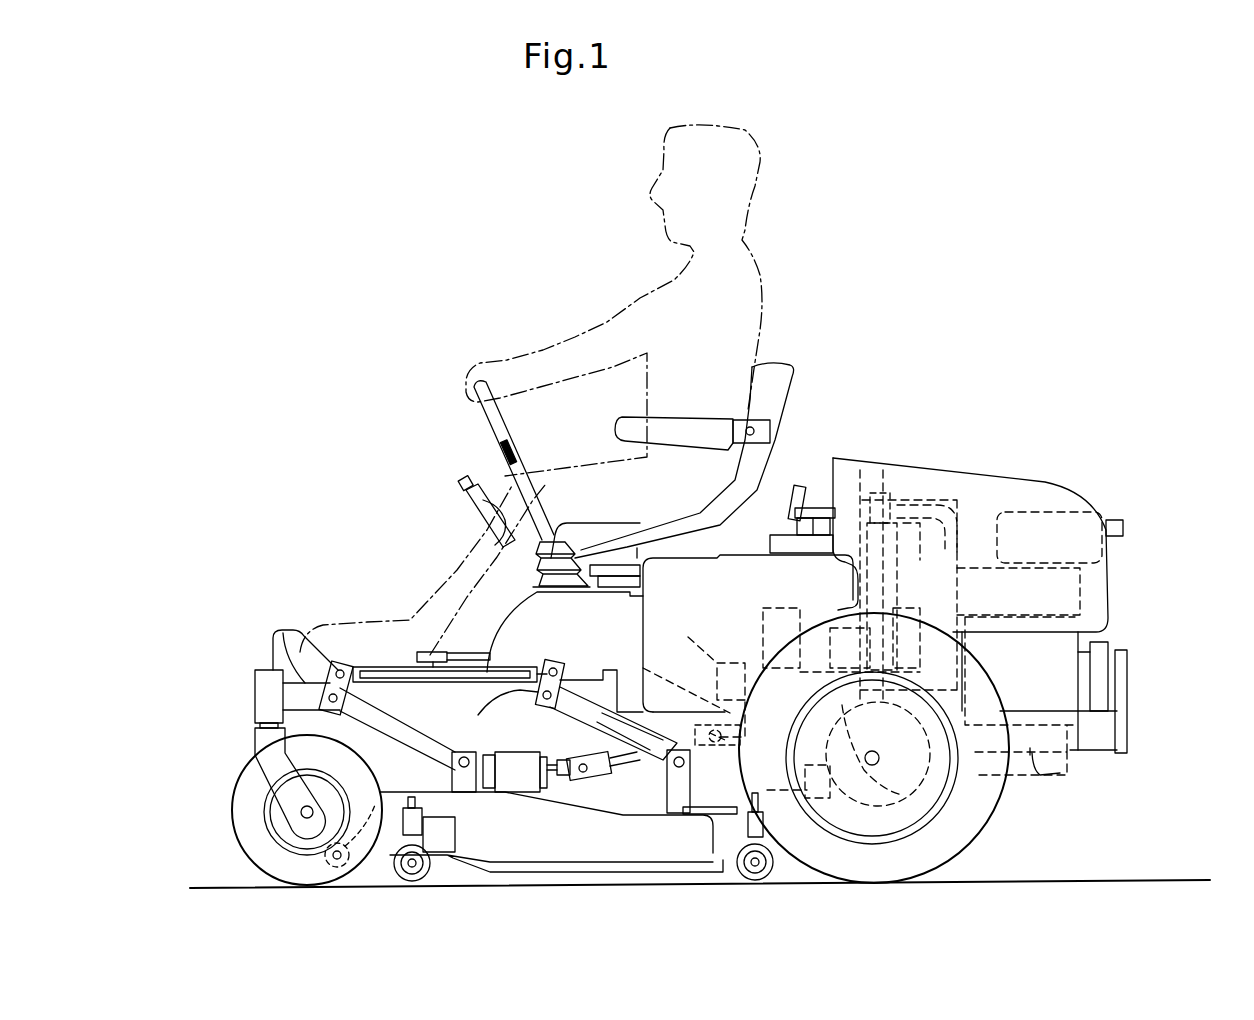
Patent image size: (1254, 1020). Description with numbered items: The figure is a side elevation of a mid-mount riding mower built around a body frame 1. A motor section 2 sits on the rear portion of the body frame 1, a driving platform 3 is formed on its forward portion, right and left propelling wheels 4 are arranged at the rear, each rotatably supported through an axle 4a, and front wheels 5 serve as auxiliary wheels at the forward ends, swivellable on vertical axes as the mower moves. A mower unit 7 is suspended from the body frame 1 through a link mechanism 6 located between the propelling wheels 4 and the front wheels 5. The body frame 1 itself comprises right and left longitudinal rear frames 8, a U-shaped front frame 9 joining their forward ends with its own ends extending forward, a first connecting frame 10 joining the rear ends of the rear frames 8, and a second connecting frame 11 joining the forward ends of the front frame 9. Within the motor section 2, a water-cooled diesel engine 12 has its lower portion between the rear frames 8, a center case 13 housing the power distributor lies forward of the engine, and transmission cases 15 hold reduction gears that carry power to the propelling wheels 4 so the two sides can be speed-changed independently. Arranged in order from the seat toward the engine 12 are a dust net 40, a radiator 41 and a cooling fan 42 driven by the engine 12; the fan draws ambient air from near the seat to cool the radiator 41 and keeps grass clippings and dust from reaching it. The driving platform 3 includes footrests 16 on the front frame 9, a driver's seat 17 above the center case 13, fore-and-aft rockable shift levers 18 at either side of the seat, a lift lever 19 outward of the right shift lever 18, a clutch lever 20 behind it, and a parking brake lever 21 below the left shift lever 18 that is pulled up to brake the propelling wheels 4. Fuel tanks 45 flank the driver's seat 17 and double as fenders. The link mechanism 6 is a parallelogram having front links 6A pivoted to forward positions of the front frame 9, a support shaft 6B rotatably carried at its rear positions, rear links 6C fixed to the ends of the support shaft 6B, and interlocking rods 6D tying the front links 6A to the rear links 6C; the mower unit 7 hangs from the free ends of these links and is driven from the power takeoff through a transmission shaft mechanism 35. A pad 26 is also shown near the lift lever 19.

The body frame 1 is at (1099, 760).
The motor section 2 is at (992, 462).
The driving platform 3 is at (500, 345).
The propelling wheels 4 is at (975, 833).
The axle 4a is at (880, 759).
The front wheels 5 is at (233, 800).
The link mechanism 6 is at (576, 678).
The front links 6A is at (381, 730).
The support shaft 6B is at (474, 754).
The rear links 6C is at (593, 732).
The interlocking rods 6D is at (523, 660).
The mower unit 7 is at (623, 812).
The rear frames 8 is at (1032, 753).
The front frame 9 is at (283, 668).
The first connecting frame 10 is at (1130, 723).
The second connecting frame 11 is at (257, 700).
The engine 12 is at (1070, 677).
The center case 13 is at (748, 646).
The transmission cases 15 is at (860, 803).
The footrests 16 is at (291, 628).
The driver's seat 17 is at (790, 380).
The shift levers 18 is at (512, 428).
The lift lever 19 is at (463, 490).
The clutch lever 20 is at (803, 487).
The parking brake lever 21 is at (430, 652).
The pedal pad 26 is at (463, 478).
The transmission shaft mechanism 35 is at (703, 769).
The dust net 40 is at (835, 495).
The radiator 41 is at (878, 493).
The cooling fan 42 is at (923, 503).
The fuel tanks 45 is at (690, 560).